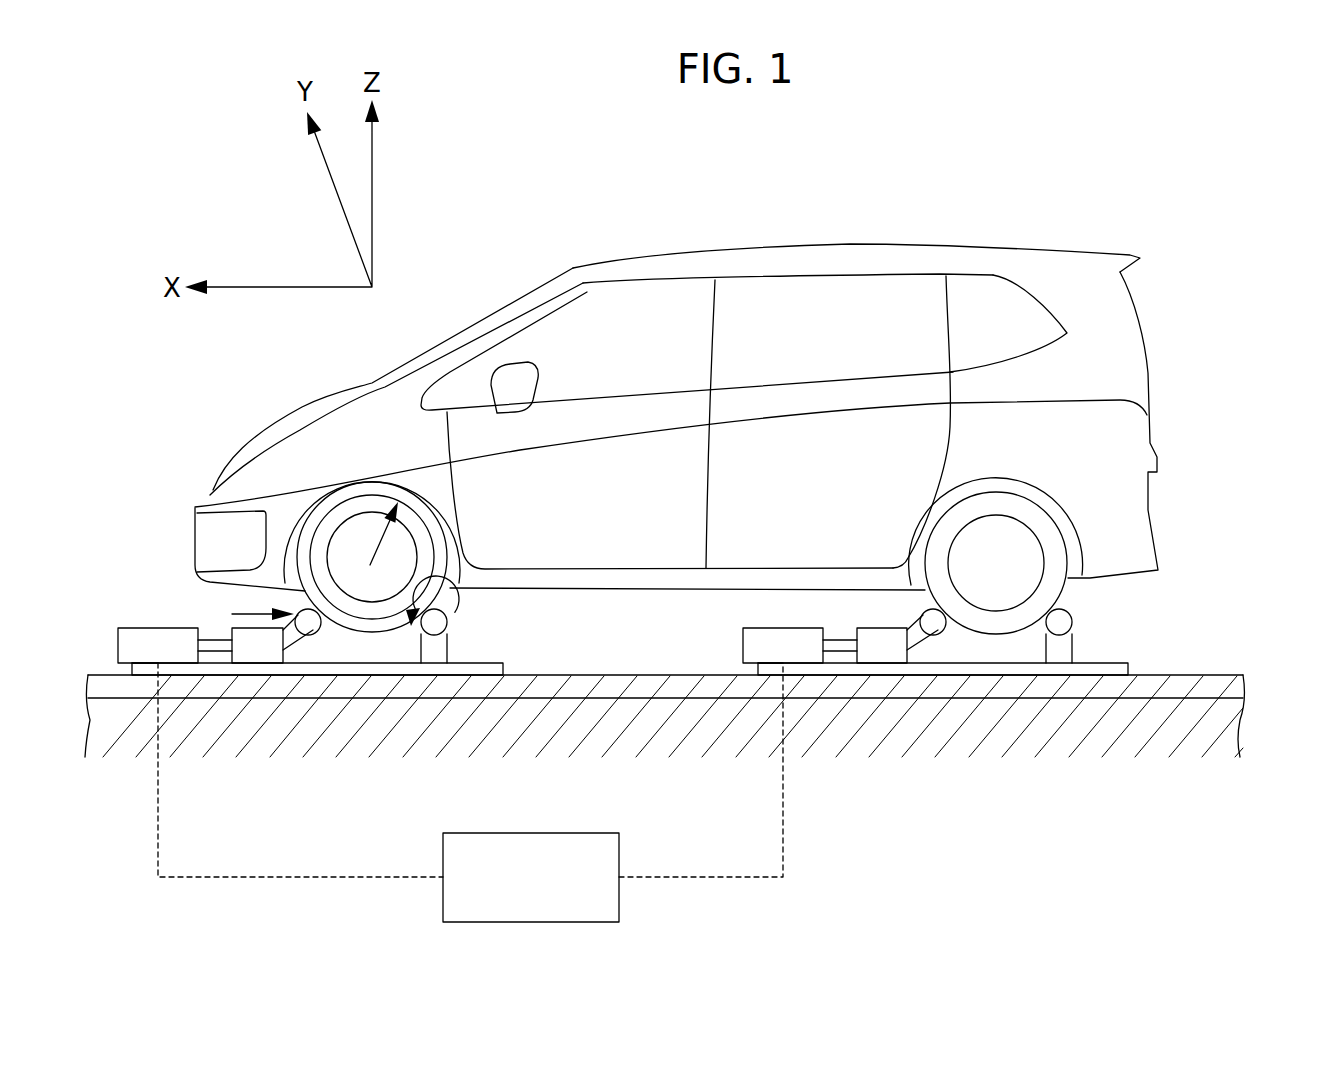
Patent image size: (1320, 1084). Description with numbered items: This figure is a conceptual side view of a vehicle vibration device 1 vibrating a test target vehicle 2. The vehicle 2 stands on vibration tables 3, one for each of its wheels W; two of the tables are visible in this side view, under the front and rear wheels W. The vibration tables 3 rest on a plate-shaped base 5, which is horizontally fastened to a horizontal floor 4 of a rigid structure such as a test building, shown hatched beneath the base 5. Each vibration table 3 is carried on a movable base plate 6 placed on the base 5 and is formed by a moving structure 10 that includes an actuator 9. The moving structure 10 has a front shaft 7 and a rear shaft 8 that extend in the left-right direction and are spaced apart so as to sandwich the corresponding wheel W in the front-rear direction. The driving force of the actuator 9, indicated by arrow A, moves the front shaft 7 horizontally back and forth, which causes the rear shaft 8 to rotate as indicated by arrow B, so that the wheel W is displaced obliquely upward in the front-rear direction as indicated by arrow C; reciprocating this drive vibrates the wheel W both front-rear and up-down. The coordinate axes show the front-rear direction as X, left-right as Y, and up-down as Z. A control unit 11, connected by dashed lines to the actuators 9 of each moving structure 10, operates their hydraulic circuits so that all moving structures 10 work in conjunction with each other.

The vehicle vibration device 1 is at (135, 545).
The vehicle 2 is at (714, 404).
The vibration table 3 is at (145, 695).
The floor 4 is at (1240, 737).
The base 5 is at (1237, 687).
The movable base plate 6 is at (143, 667).
The front shaft 7 is at (320, 632).
The rear shaft 8 is at (445, 632).
The actuator 9 is at (182, 653).
The moving structure 10 is at (213, 670).
The control unit 11 is at (608, 898).
The wheel W is at (308, 560).